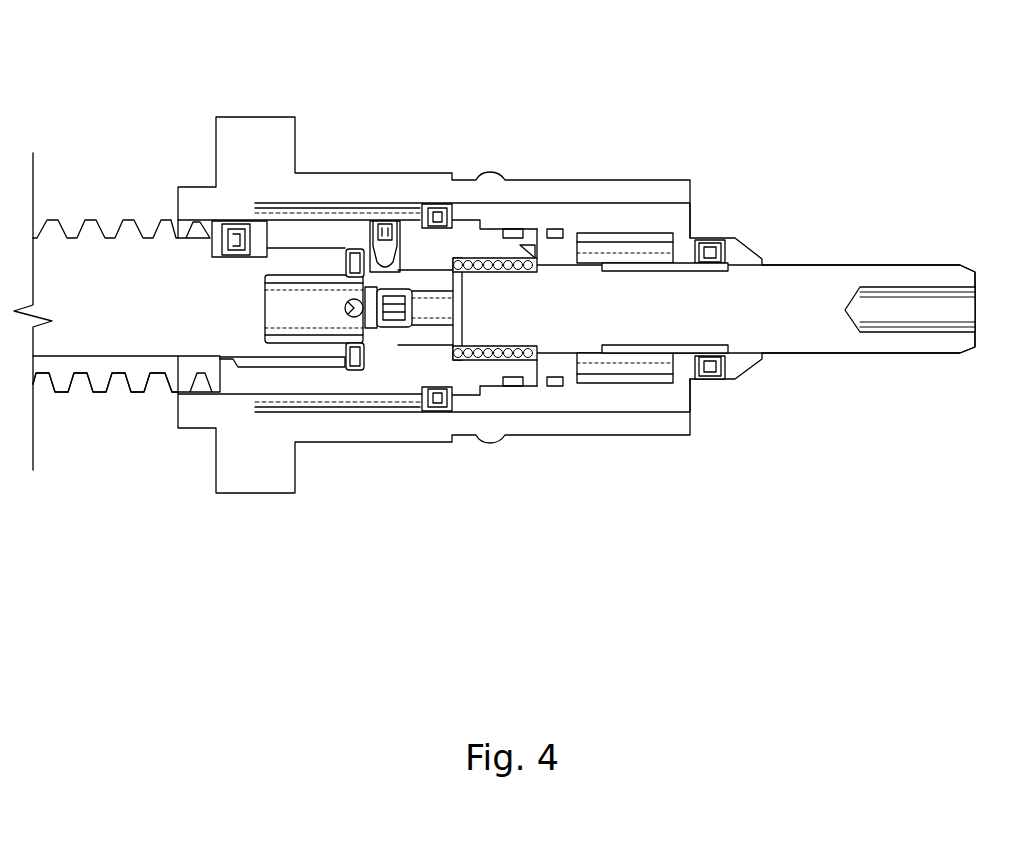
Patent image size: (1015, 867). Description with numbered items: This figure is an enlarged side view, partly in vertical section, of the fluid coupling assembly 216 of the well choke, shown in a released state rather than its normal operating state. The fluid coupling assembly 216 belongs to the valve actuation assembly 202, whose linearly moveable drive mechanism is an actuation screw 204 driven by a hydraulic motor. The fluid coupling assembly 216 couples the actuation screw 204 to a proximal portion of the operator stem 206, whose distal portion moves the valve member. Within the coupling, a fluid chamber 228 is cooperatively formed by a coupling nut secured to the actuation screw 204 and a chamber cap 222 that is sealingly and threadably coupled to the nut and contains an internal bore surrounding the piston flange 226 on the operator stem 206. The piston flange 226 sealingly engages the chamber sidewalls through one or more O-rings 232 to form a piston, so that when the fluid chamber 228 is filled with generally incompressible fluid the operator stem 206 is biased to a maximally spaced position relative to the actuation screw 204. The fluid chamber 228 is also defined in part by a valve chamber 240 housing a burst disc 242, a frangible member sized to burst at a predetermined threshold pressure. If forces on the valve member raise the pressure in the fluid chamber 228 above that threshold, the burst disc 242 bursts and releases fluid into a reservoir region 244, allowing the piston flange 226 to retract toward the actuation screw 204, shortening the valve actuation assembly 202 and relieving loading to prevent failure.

The valve actuation assembly 202 is at (104, 216).
The actuation screw 204 is at (108, 393).
The operator stem 206 is at (765, 297).
The fluid coupling assembly 216 is at (853, 57).
The chamber cap 222 is at (673, 400).
The piston flange 226 is at (562, 360).
The fluid chamber 228 is at (519, 262).
The O-rings 232 is at (553, 388).
The valve chamber 240 is at (438, 312).
The burst disc 242 is at (390, 323).
The reservoir region 244 is at (308, 312).